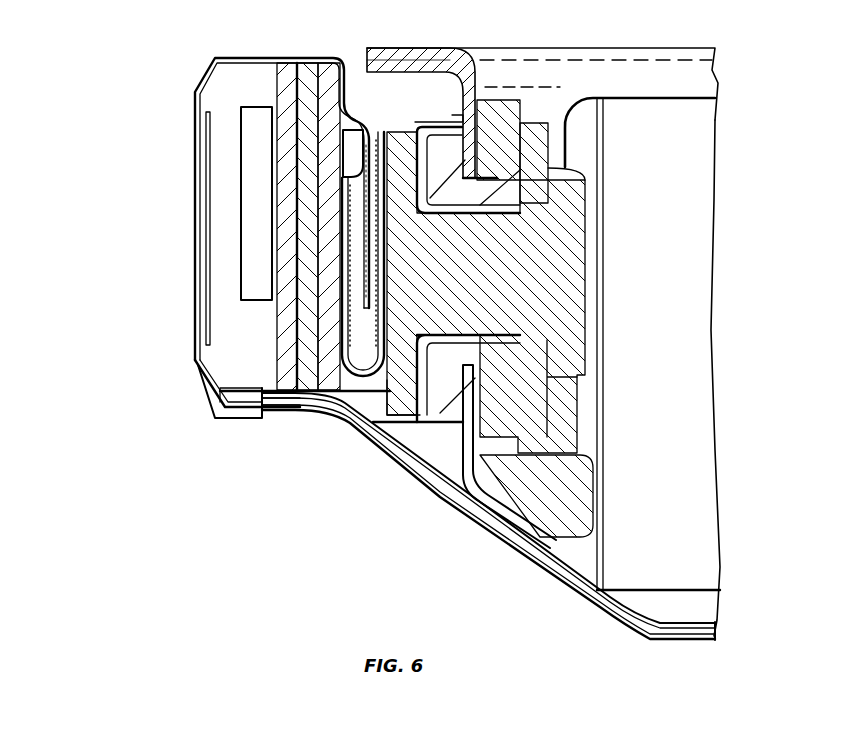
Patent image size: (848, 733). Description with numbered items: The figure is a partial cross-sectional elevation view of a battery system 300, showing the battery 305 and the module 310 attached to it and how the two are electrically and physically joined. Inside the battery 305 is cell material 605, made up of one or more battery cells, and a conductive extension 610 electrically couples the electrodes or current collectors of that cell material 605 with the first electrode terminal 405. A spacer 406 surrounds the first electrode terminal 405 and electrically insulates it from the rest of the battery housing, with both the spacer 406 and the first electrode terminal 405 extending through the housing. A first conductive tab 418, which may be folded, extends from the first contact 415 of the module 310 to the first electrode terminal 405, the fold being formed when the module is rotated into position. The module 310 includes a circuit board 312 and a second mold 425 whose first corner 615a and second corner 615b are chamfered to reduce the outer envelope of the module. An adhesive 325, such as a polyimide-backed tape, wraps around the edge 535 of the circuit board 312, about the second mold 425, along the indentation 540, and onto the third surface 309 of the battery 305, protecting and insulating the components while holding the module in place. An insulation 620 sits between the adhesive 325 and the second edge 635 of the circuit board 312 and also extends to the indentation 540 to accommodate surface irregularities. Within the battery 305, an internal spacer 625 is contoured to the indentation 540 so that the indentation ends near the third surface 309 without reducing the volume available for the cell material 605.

The battery system 300 is at (84, 94).
The battery 305 is at (718, 82).
The third surface 309 is at (668, 640).
The module 310 is at (200, 335).
The circuit board 312 is at (262, 408).
The adhesive 325 is at (196, 232).
The first electrode terminal 405 is at (585, 247).
The spacer 406 is at (435, 422).
The first contact 415 is at (347, 243).
The first conductive tab 418 is at (333, 396).
The second mold 425 is at (196, 290).
The edge 535 is at (287, 63).
The indentation 540 is at (545, 578).
The cell material 605 is at (722, 375).
The conductive extension 610 is at (592, 97).
The first corner 615a is at (205, 78).
The second corner 615b is at (206, 374).
The insulation 620 is at (462, 528).
The internal spacer 625 is at (590, 500).
The second edge 635 is at (297, 408).